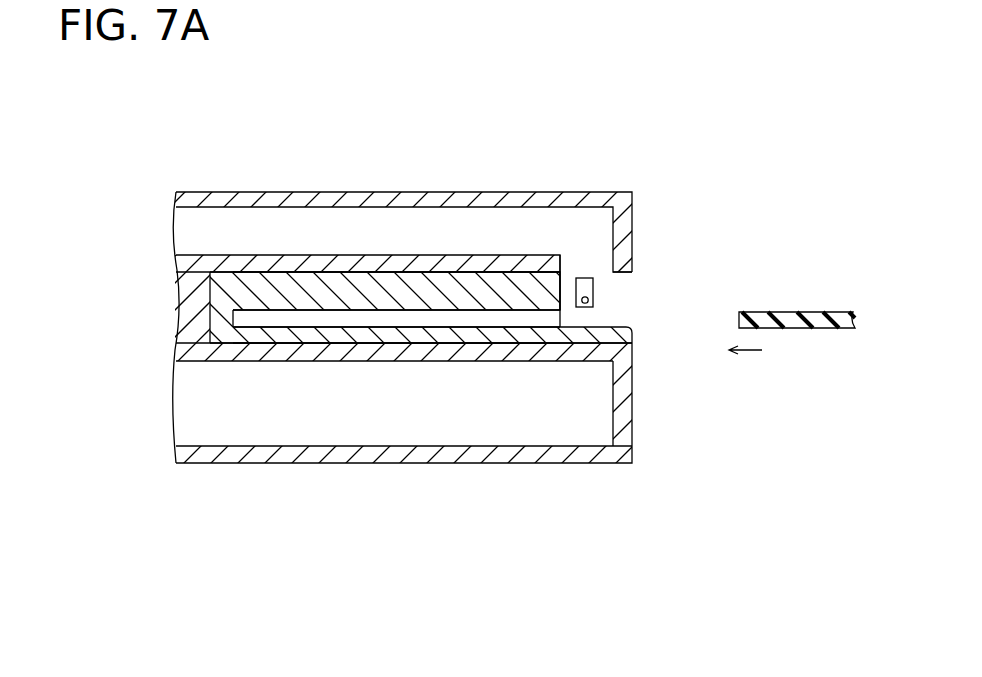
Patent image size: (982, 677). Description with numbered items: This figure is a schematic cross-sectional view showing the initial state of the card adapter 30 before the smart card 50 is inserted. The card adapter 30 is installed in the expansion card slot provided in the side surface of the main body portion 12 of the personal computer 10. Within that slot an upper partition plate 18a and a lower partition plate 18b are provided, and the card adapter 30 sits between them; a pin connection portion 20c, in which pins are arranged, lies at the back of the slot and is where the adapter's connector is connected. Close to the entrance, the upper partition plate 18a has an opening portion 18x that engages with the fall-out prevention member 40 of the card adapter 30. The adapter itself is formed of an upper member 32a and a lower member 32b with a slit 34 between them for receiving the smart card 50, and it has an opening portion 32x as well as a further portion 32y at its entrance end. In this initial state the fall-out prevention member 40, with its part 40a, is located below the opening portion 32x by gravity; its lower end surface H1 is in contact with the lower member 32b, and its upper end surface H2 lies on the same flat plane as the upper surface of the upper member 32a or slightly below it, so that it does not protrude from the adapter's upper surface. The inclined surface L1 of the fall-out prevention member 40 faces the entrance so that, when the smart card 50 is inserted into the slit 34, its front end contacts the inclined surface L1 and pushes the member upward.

The personal computer 10 is at (432, 80).
The main body portion 12 is at (298, 195).
The upper partition plate 18a is at (350, 262).
The lower partition plate 18b is at (422, 352).
The opening portion 18x is at (580, 265).
The pin connection portion 20c is at (182, 301).
The card adapter 30 is at (258, 285).
The upper member 32a is at (440, 290).
The lower member 32b is at (548, 335).
The opening portion 32x is at (561, 255).
The insertion opening 32y is at (623, 272).
The slit 34 is at (488, 318).
The fall-out prevention member 40 is at (598, 308).
The contact terminal 40a is at (592, 297).
The smart card 50 is at (796, 312).
The lower end surface H1 is at (573, 335).
The upper end surface H2 is at (618, 245).
The inclined surface L1 is at (627, 318).